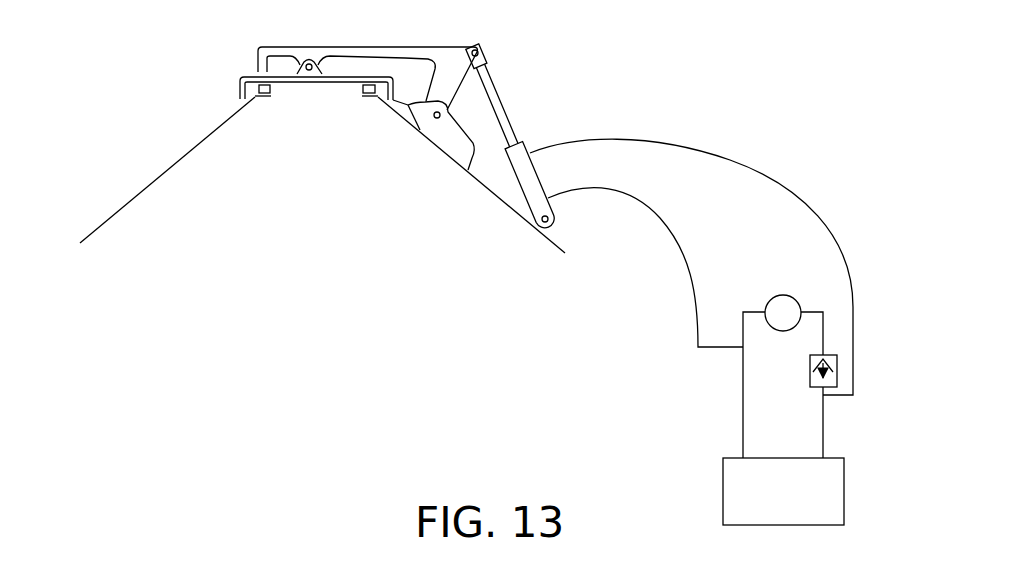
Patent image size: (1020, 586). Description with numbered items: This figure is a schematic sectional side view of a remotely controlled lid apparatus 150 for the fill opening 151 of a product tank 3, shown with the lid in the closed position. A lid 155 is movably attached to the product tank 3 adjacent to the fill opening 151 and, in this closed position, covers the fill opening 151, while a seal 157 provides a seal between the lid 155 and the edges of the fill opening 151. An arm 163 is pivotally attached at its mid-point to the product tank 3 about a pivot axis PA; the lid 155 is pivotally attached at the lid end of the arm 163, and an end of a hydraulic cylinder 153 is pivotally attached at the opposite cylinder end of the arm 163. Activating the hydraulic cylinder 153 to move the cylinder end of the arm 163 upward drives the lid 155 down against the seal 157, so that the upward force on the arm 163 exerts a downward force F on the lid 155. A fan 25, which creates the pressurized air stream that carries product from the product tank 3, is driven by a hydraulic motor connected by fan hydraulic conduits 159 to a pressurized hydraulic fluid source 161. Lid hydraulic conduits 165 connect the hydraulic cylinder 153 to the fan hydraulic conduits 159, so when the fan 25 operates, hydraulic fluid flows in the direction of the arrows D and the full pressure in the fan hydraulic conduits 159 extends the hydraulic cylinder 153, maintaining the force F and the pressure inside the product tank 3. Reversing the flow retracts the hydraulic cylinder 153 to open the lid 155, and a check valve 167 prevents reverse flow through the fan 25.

The product tank 3 is at (147, 188).
The remotely controlled lid apparatus 150 is at (604, 53).
The product tank fill opening 151 is at (306, 93).
The hydraulic cylinder 153 is at (506, 108).
The lid 155 is at (241, 78).
The seal 157 is at (361, 91).
The fan hydraulic conduits 159 is at (741, 432).
The pressurized hydraulic fluid source 161 is at (787, 527).
The arm 163 is at (398, 45).
The lid hydraulic conduits 165 is at (675, 140).
The check valve 167 is at (840, 373).
The fan 25 is at (785, 295).
The pivot axis PA is at (436, 121).
The downward force F is at (309, 35).
The direction of hydraulic fluid flow D is at (727, 374).